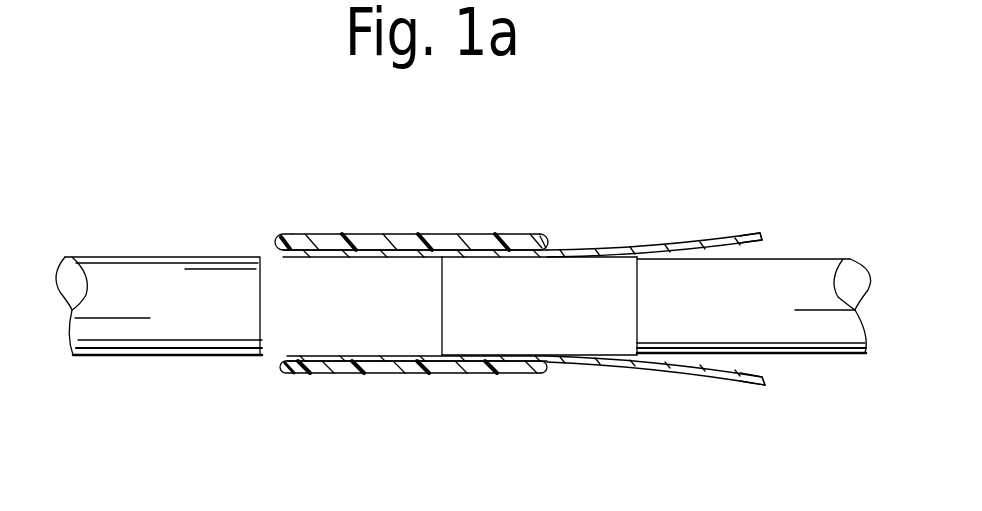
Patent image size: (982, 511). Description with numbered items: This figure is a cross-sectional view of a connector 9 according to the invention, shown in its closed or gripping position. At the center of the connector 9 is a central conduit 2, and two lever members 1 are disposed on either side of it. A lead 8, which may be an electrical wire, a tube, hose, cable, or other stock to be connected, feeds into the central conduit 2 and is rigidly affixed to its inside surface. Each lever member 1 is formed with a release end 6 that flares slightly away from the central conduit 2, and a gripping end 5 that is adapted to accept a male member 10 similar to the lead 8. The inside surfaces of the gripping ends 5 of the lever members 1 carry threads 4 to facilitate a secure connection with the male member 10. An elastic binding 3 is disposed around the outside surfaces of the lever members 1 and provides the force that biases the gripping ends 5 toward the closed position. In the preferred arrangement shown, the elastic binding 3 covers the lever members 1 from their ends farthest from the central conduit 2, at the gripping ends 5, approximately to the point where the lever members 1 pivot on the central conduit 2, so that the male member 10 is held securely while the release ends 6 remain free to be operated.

The lever member 1 is at (589, 250).
The central conduit 2 is at (538, 318).
The elastic binding 3 is at (402, 233).
The threads 4 is at (292, 250).
The gripping end 5 is at (339, 233).
The release end 6 is at (665, 238).
The lead 8 is at (784, 353).
The connector 9 is at (468, 386).
The male member 10 is at (58, 268).